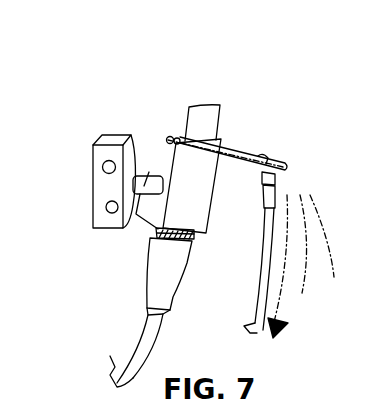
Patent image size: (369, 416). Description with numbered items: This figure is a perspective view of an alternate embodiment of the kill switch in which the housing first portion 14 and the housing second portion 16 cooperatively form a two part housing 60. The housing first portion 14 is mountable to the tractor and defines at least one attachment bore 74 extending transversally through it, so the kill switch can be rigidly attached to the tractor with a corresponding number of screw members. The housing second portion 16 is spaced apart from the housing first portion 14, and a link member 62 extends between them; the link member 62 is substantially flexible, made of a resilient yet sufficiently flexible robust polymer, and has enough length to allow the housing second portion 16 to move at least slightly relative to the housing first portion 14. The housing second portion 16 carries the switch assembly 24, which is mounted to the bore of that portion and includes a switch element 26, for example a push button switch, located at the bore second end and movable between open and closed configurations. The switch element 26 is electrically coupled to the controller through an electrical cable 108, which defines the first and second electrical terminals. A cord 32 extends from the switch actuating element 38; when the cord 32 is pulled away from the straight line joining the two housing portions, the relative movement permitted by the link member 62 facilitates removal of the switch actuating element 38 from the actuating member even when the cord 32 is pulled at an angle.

The housing first portion 14 is at (100, 183).
The attachment bore 74 is at (108, 165).
The two part housing 60 is at (138, 131).
The link member 62 is at (145, 181).
The switch assembly 24 is at (221, 103).
The housing second portion 16 is at (190, 197).
The switch actuating element 38 is at (249, 148).
The cord 32 is at (267, 221).
The switch element 26 is at (150, 270).
The electrical cable 108 is at (138, 353).